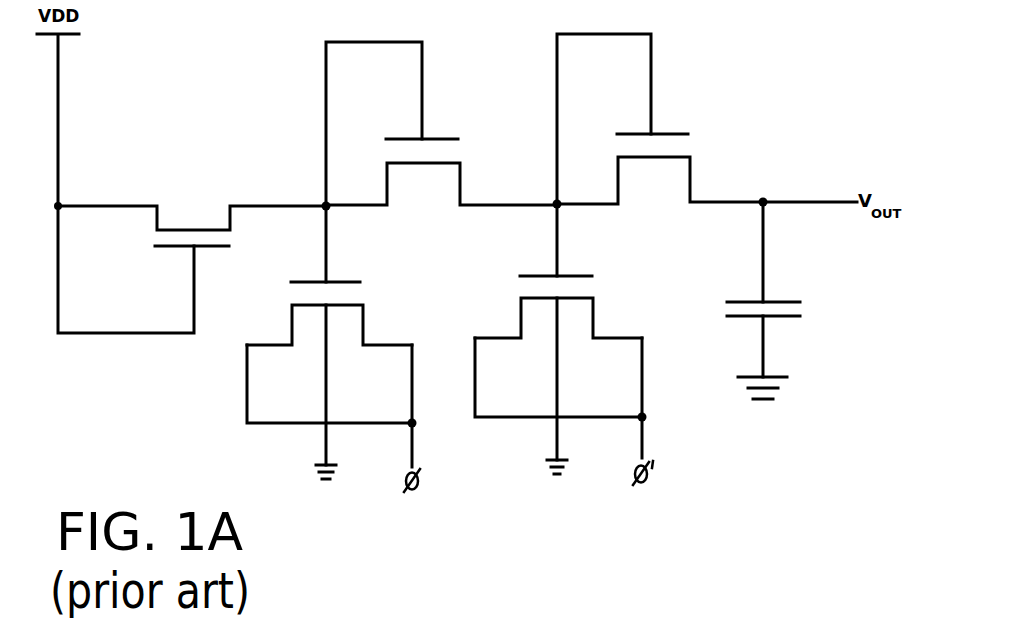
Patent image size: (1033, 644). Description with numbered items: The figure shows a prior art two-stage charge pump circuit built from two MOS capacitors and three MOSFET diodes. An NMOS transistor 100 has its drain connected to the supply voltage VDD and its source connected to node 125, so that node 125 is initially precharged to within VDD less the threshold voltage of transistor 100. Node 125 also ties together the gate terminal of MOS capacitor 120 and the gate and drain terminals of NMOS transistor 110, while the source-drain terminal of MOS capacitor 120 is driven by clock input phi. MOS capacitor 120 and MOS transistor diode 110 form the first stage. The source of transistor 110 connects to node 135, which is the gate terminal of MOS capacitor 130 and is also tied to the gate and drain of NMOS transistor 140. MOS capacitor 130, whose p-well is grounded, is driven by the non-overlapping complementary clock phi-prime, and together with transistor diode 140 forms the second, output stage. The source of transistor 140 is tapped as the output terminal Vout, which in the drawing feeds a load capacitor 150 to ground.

The NMOS transistor 100 is at (205, 248).
The NMOS transistor 110 is at (430, 137).
The MOS capacitor 120 is at (340, 280).
The node 125 is at (326, 206).
The MOS capacitor 130 is at (577, 272).
The node 135 is at (557, 204).
The NMOS transistor 140 is at (660, 131).
The load capacitor 150 is at (785, 300).